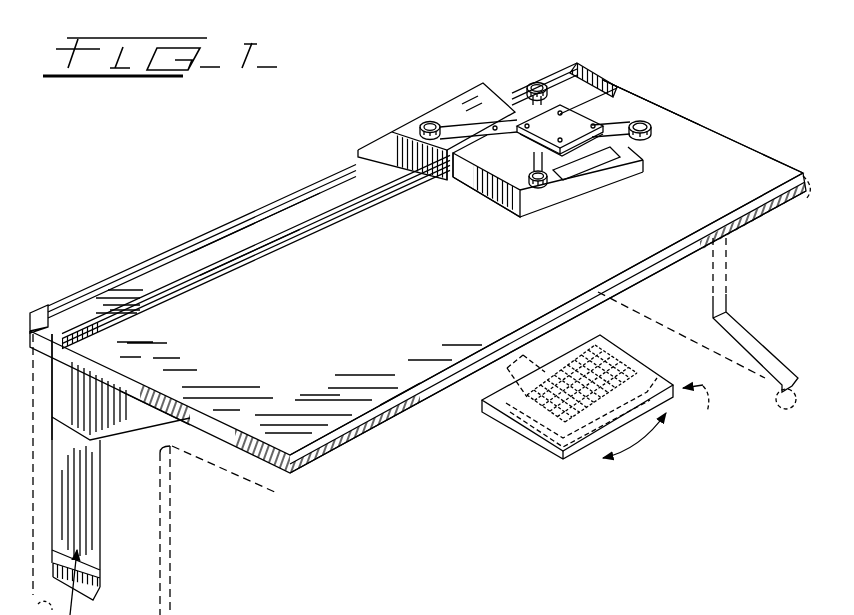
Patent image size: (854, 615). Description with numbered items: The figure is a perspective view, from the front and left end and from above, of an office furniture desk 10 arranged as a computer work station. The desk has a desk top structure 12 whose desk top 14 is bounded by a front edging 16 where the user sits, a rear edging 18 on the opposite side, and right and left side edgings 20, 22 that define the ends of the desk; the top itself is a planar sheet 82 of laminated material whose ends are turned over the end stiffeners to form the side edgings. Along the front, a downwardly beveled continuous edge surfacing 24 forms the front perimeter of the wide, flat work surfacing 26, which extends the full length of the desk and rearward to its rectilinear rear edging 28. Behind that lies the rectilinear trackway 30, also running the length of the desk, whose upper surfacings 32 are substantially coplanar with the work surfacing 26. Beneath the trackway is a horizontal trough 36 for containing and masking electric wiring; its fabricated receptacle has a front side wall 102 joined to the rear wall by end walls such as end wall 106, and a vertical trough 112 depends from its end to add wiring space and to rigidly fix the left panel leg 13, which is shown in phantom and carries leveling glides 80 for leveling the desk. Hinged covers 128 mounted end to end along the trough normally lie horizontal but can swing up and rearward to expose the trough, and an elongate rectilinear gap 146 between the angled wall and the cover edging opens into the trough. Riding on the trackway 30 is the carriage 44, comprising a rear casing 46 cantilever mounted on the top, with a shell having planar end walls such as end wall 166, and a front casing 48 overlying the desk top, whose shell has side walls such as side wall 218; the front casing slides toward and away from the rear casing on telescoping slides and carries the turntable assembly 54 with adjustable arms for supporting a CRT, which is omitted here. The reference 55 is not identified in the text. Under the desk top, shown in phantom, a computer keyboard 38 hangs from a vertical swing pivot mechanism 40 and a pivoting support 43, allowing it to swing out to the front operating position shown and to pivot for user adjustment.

The office furniture desk 10 is at (692, 70).
The desk top structure 12 is at (737, 140).
The left panel leg 13 is at (714, 300).
The desk top 14 is at (692, 147).
The front edging 16 is at (381, 432).
The rear edging 18 is at (32, 315).
The right side edging 20 is at (657, 100).
The left side edging 22 is at (200, 423).
The front downwardly beveled edge surfacing 24 is at (402, 402).
The work surfacing 26 is at (290, 357).
The rear edging of the work surfacing 28 is at (318, 238).
The trackway 30 is at (252, 211).
The upper surfacings of the trackway 32 is at (600, 76).
The horizontal trough 36 is at (114, 392).
The computer keyboard 38 is at (665, 421).
The vertical swing pivot mechanism 40 is at (538, 452).
The pivoting support 43 is at (524, 365).
The carriage 44 is at (500, 152).
The rear casing 46 is at (474, 83).
The front casing 48 is at (518, 222).
The turntable assembly 54 is at (524, 112).
The base slot 55 is at (540, 130).
The leveling glides 80 is at (770, 407).
The planar sheet 82 is at (740, 172).
The front side wall 102 is at (135, 400).
The end wall 106 is at (65, 368).
The vertical trough 112 is at (214, 230).
The covers 128 is at (279, 220).
The elongate rectilinear gap 146 is at (250, 255).
The end wall of the rear casing shell 166 is at (427, 165).
The side wall of the front casing shell 218 is at (503, 195).